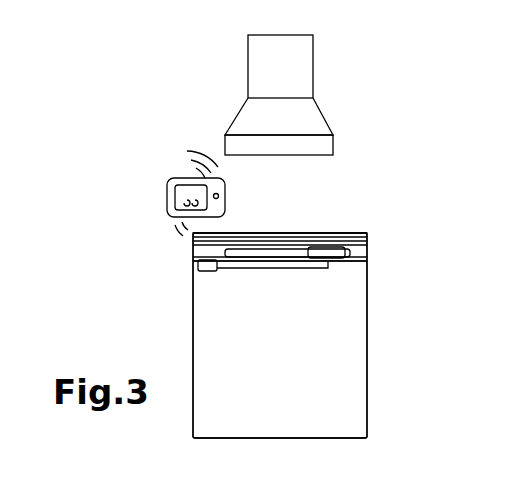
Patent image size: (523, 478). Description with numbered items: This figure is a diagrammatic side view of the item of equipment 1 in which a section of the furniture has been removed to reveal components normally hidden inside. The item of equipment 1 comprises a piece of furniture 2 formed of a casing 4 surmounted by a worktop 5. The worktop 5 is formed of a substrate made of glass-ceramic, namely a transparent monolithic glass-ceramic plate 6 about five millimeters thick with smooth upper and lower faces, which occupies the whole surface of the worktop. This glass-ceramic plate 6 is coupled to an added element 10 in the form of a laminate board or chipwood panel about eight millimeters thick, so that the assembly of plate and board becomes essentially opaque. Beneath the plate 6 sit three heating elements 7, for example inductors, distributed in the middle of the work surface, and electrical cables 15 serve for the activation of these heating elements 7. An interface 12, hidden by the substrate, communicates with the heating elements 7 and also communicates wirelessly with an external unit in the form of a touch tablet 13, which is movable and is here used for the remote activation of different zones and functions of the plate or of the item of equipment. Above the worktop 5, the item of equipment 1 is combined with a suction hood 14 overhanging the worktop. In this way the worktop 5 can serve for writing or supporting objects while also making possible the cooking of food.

The item of equipment 1 is at (152, 118).
The piece of furniture 2 is at (367, 302).
The casing 4 is at (357, 390).
The worktop 5 is at (332, 233).
The glass-ceramic plate 6 is at (367, 233).
The heating elements 7 is at (312, 233).
The added element 10 is at (193, 238).
The interface 12 is at (198, 266).
The touch tablet 13 is at (167, 190).
The suction hood 14 is at (300, 62).
The electrical cables 15 is at (297, 262).